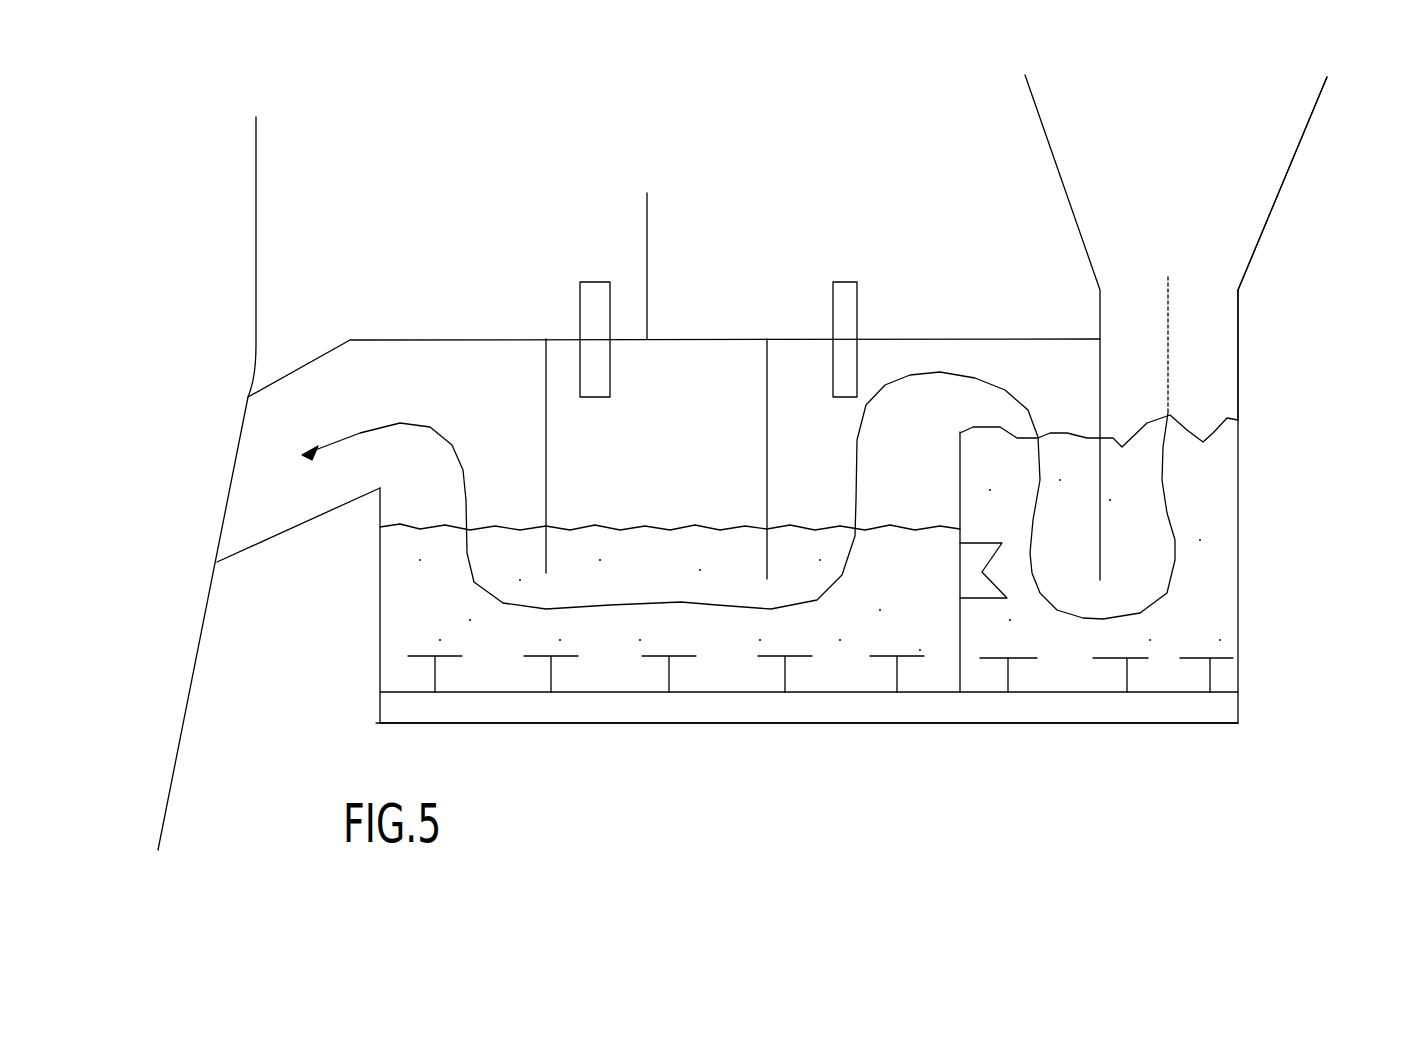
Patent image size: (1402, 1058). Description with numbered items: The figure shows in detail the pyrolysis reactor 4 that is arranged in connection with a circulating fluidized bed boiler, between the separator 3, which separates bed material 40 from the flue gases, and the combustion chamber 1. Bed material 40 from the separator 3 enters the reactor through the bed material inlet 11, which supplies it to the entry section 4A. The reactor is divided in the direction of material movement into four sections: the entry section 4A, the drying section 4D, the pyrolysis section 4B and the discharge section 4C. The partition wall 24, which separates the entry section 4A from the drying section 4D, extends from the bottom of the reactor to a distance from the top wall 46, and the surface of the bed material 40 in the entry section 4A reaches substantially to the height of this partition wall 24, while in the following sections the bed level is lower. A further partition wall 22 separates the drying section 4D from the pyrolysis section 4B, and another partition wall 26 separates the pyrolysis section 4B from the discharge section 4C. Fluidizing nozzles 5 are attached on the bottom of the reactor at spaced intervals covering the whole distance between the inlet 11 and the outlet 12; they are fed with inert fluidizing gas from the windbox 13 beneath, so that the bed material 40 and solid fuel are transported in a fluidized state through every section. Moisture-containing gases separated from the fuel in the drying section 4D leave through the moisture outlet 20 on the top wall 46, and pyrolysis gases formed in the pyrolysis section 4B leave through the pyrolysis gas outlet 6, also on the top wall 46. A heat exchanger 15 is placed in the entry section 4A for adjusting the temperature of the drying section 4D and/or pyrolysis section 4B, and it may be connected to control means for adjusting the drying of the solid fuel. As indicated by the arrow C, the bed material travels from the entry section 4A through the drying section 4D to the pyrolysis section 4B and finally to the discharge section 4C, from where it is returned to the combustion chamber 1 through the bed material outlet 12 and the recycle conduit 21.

The combustion chamber 1 is at (245, 188).
The separator 3 is at (1262, 155).
The pyrolysis reactor 4 is at (521, 695).
The entry section 4A is at (1068, 563).
The pyrolysis section 4B is at (703, 363).
The discharge section 4C is at (468, 360).
The drying section 4D is at (806, 360).
The fluidizing nozzles 5 is at (783, 675).
The pyrolysis gas outlet 6 is at (593, 293).
The bed material inlet 11 is at (1220, 340).
The bed material outlet 12 is at (365, 400).
The windbox 13 is at (496, 707).
The heat exchanger 15 is at (969, 604).
The moisture outlet 20 is at (855, 295).
The recycle conduit 21 is at (286, 500).
The partition wall 22 is at (766, 385).
The partition wall 24 is at (960, 632).
The partition wall 26 is at (548, 365).
The bed material 40 is at (1195, 557).
The top wall 46 is at (644, 240).
The arrow C is at (353, 432).